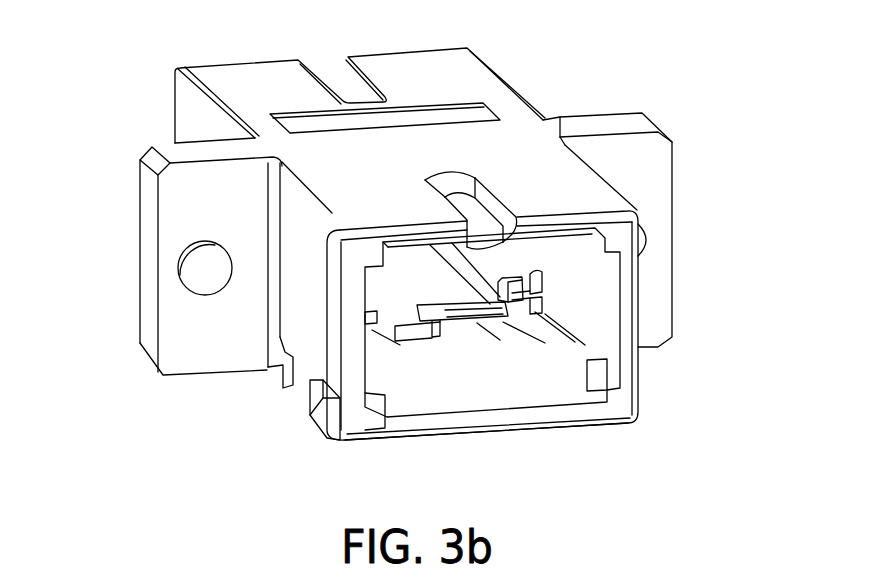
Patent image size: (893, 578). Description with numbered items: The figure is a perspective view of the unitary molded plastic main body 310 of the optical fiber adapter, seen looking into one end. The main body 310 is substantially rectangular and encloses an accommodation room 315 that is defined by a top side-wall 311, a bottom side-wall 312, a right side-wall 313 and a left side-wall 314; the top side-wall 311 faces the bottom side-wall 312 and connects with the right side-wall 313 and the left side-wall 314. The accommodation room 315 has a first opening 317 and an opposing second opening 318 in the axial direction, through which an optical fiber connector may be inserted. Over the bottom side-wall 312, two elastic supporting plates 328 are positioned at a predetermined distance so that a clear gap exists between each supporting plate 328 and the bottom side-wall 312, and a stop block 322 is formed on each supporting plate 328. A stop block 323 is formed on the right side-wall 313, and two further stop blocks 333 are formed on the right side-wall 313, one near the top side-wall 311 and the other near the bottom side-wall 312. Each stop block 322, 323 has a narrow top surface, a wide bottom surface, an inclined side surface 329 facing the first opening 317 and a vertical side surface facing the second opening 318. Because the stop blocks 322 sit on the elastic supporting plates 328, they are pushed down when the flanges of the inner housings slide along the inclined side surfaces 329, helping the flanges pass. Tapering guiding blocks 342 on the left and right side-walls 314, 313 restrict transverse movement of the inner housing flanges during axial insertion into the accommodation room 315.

The main body 310 is at (638, 74).
The top side-wall 311 is at (357, 187).
The bottom side-wall 312 is at (468, 418).
The right side-wall 313 is at (625, 382).
The left side-wall 314 is at (355, 347).
The accommodation room 315 is at (443, 367).
The first opening 317 is at (557, 382).
The second opening 318 is at (325, 60).
The stop block 322 is at (369, 320).
The stop block 323 is at (545, 286).
The elastic supporting plate 328 is at (373, 325).
The inclined side surface 329 is at (468, 313).
The stop block 333 is at (538, 313).
The guiding block 342 is at (633, 425).